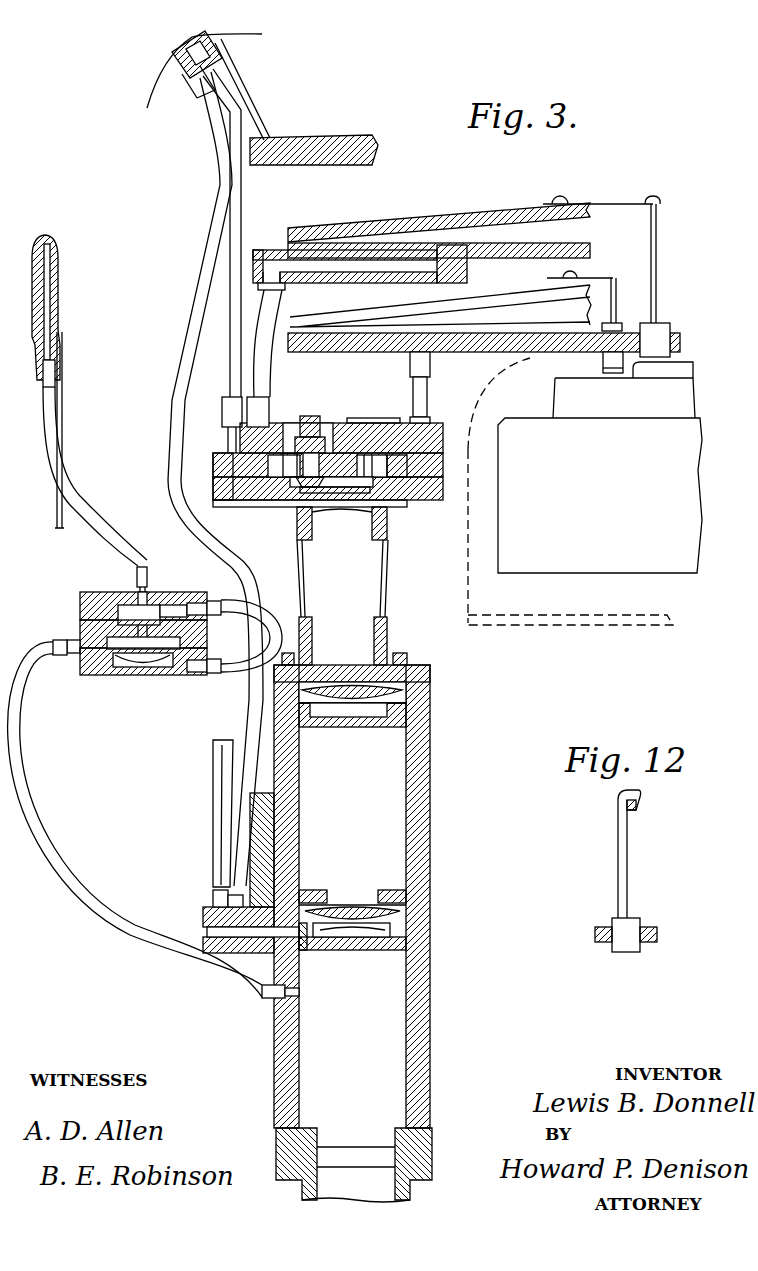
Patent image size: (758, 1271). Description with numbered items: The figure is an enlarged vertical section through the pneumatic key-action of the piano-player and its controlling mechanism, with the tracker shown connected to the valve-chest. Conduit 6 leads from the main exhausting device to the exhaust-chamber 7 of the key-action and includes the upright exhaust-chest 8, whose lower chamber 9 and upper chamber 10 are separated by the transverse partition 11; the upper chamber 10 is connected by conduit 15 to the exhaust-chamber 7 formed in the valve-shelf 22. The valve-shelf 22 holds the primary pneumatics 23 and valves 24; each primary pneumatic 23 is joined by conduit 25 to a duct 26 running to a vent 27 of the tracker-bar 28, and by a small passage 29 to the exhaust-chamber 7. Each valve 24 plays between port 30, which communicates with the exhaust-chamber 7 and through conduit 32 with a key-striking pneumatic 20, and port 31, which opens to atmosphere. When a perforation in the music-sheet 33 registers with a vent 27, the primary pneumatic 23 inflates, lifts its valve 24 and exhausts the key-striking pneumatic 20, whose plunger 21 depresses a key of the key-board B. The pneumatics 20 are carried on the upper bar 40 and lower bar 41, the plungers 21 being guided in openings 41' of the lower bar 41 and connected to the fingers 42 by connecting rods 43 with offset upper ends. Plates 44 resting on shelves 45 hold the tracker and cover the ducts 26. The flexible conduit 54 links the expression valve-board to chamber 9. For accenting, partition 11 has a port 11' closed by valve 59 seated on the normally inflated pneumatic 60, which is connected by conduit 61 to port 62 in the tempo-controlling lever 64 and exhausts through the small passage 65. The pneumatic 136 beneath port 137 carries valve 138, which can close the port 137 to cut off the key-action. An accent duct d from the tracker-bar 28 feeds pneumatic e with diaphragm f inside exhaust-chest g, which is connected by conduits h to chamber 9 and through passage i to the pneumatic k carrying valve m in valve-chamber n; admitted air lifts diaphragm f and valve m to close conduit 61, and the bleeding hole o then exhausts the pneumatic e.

In FIG. 3, the conduit 6 is at (354, 1165).
In FIG. 3, the exhaust-chamber 7 is at (393, 464).
In FIG. 3, the exhaust-chest 8 is at (428, 993).
In FIG. 3, the lower chamber 9 is at (348, 1046).
In FIG. 3, the upper chamber 10 is at (352, 733).
In FIG. 3, the transverse partition 11 is at (352, 882).
In FIG. 3, the port 11' is at (371, 881).
In FIG. 3, the conduit 15 is at (390, 572).
In FIG. 3, the key-striking pneumatic 20 is at (507, 248).
In FIG. 3, the key-striking plunger 21 is at (660, 336).
In FIG. 12, the key-striking plunger 21 is at (630, 926).
In FIG. 3, the valve-shelf 22 is at (443, 477).
In FIG. 3, the primary pneumatic 23 is at (305, 492).
In FIG. 3, the valve 24 is at (322, 440).
In FIG. 3, the conduit 25 is at (245, 500).
In FIG. 3, the duct 26 is at (228, 422).
In FIG. 3, the vent 27 is at (200, 42).
In FIG. 3, the tracker-bar 28 is at (218, 49).
In FIG. 3, the passage 29 is at (290, 483).
In FIG. 3, the port 30 is at (321, 466).
In FIG. 3, the port 31 is at (310, 418).
In FIG. 3, the conduit 32 is at (262, 375).
In FIG. 3, the music-sheet 33 is at (160, 83).
In FIG. 3, the upper bar 40 is at (272, 250).
In FIG. 3, the lower bar 41 is at (464, 357).
In FIG. 12, the lower bar 41 is at (673, 937).
In FIG. 3, the opening 41' is at (695, 343).
In FIG. 12, the opening 41' is at (580, 937).
In FIG. 3, the finger 42 is at (612, 205).
In FIG. 12, the finger 42 is at (620, 795).
In FIG. 3, the connecting rod 43 is at (615, 290).
In FIG. 12, the connecting rod 43 is at (627, 865).
In FIG. 3, the plate 44 is at (206, 92).
In FIG. 3, the shelf 45 is at (345, 145).
In FIG. 3, the flexible conduit 54 is at (230, 743).
In FIG. 3, the valve 59 is at (360, 906).
In FIG. 3, the pneumatic 60 is at (352, 937).
In FIG. 3, the conduit 61 is at (222, 912).
In FIG. 3, the port 62 is at (50, 290).
In FIG. 3, the tempo-controlling lever 64 is at (63, 396).
In FIG. 3, the passage 65 is at (305, 948).
In FIG. 3, the pneumatic 136 is at (370, 718).
In FIG. 3, the port 137 is at (345, 682).
In FIG. 3, the valve 138 is at (365, 692).
In FIG. 3, the key-board B is at (698, 392).
In FIG. 3, the duct d is at (183, 320).
In FIG. 3, the pneumatic e is at (165, 666).
In FIG. 3, the diaphragm f is at (122, 667).
In FIG. 3, the exhaust-chest g is at (120, 642).
In FIG. 3, the conduit h is at (72, 843).
In FIG. 3, the passage i is at (200, 637).
In FIG. 3, the pneumatic k is at (172, 606).
In FIG. 3, the valve m is at (138, 612).
In FIG. 3, the valve-chamber n is at (150, 608).
In FIG. 3, the bleeding hole o is at (175, 668).